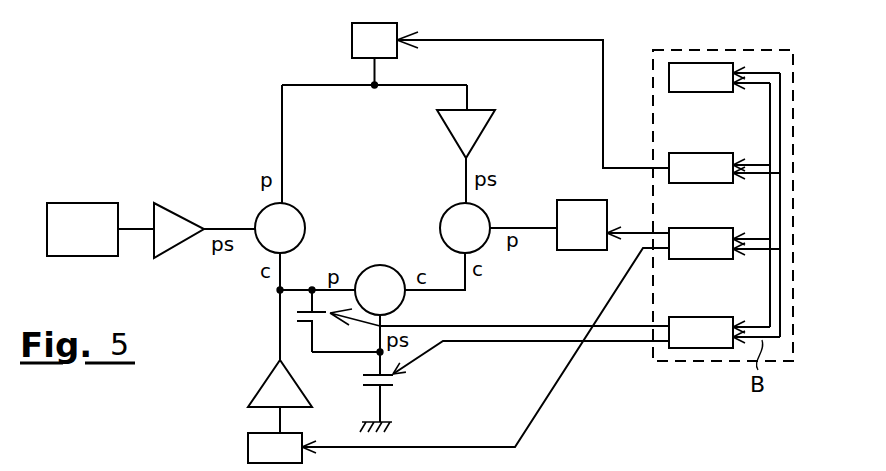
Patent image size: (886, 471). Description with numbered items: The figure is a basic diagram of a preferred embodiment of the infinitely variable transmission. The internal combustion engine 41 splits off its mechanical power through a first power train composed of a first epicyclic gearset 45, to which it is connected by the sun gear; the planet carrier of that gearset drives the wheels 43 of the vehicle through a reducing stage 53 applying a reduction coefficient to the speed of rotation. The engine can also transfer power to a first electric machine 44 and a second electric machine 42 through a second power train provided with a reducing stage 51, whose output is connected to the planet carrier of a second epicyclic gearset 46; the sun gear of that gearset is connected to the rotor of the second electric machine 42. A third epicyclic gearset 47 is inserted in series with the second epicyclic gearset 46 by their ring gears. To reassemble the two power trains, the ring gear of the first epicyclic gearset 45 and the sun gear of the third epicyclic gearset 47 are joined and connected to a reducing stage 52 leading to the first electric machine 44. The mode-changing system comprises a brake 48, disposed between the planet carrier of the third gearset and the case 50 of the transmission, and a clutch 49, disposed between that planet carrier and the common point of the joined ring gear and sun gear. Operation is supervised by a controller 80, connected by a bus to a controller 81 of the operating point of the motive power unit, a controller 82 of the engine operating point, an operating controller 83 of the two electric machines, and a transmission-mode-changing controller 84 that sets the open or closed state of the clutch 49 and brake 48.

The internal combustion engine 41 is at (352, 40).
The second electric machine 42 is at (583, 200).
The wheels 43 is at (83, 203).
The first electric machine 44 is at (248, 446).
The first epicyclic gearset 45 is at (292, 206).
The second epicyclic gearset 46 is at (452, 206).
The third epicyclic gearset 47 is at (397, 256).
The brake 48 is at (394, 391).
The clutch 49 is at (297, 313).
The case 50 is at (395, 425).
The reducing stage 51 is at (484, 110).
The reducing stage 52 is at (253, 380).
The reducing stage 53 is at (186, 206).
The controller 80 is at (706, 42).
The controller of the operating point of the motive power unit 81 is at (724, 77).
The controller of the operating point of the internal combustion engine 82 is at (724, 168).
The operating controller of the electric machines 83 is at (541, 337).
The transmission-mode-changing controller 84 is at (580, 332).